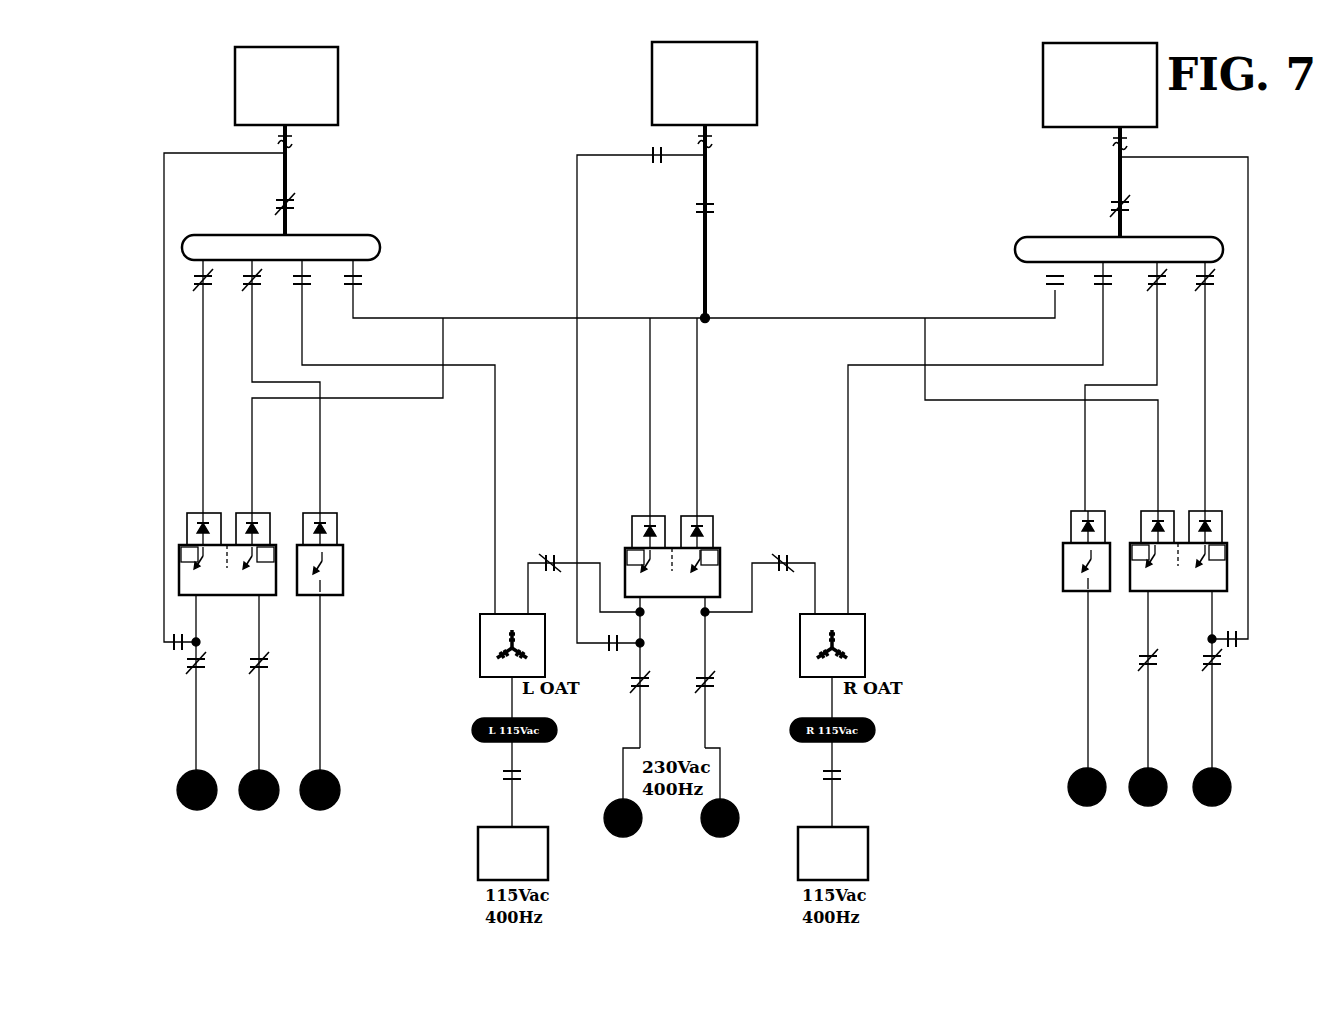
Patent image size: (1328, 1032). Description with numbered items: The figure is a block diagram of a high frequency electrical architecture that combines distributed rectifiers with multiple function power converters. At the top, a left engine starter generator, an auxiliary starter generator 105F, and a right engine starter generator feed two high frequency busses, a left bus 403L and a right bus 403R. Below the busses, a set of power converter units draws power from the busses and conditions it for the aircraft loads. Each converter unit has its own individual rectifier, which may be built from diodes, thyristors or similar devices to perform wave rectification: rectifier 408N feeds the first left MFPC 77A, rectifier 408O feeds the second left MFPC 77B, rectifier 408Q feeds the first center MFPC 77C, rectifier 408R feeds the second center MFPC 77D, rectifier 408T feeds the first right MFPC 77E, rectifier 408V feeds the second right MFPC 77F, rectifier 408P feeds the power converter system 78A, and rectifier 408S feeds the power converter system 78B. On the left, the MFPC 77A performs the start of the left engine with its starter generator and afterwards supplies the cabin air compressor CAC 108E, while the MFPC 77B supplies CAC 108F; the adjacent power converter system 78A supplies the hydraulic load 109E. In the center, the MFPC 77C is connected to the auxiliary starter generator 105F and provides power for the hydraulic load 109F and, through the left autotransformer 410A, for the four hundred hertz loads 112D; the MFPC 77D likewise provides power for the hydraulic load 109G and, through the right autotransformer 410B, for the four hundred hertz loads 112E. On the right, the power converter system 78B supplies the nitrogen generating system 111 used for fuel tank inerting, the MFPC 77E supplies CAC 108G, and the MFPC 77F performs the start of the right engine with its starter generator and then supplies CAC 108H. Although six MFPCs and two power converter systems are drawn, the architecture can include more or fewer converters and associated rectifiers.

The auxiliary starter generator 105F is at (652, 76).
The left bus 403L is at (343, 235).
The right bus 403R is at (1053, 237).
The rectifier 408N is at (187, 525).
The rectifier 408O is at (287, 488).
The rectifier 408P is at (337, 529).
The rectifier 408Q is at (634, 516).
The rectifier 408R is at (707, 516).
The rectifier 408S is at (1071, 518).
The rectifier 408T is at (1141, 518).
The rectifier 408V is at (1213, 511).
The MFPC 1a 77A is at (180, 568).
The MFPC 1b 77B is at (268, 570).
The MFPC 3a 77C is at (626, 557).
The MFPC 3b 77D is at (720, 557).
The MFPC 2a 77E is at (1146, 567).
The MFPC 2b 77F is at (1227, 568).
The power converter system 78A is at (343, 570).
The power converter system 78B is at (1063, 572).
The left autotransformer 410A is at (480, 645).
The right autotransformer 410B is at (865, 645).
The 400 Hz loads 112D is at (478, 853).
The 400 Hz loads 112E is at (868, 853).
The CAC 108E is at (192, 810).
The CAC 108F is at (254, 810).
The CAC 108G is at (1144, 806).
The CAC 108H is at (1208, 806).
The hydraulic load 109E is at (320, 810).
The hydraulic load 109F is at (620, 837).
The hydraulic load 109G is at (716, 837).
The nitrogen generating system 111 is at (1083, 806).